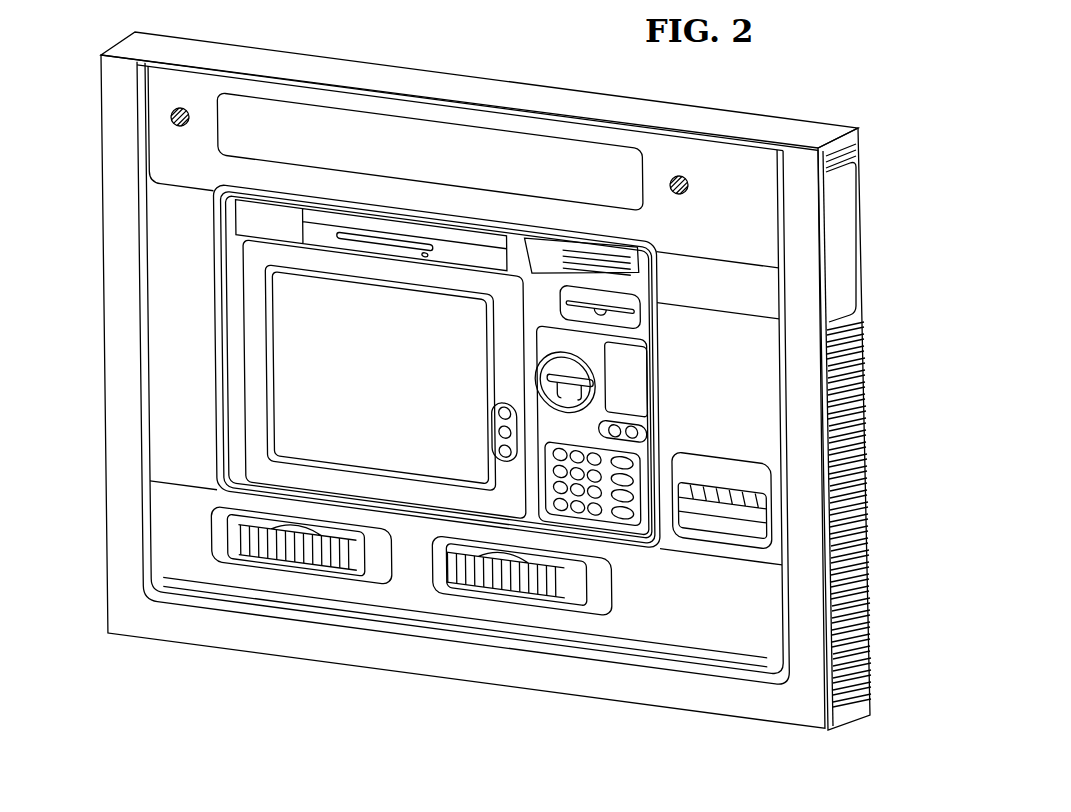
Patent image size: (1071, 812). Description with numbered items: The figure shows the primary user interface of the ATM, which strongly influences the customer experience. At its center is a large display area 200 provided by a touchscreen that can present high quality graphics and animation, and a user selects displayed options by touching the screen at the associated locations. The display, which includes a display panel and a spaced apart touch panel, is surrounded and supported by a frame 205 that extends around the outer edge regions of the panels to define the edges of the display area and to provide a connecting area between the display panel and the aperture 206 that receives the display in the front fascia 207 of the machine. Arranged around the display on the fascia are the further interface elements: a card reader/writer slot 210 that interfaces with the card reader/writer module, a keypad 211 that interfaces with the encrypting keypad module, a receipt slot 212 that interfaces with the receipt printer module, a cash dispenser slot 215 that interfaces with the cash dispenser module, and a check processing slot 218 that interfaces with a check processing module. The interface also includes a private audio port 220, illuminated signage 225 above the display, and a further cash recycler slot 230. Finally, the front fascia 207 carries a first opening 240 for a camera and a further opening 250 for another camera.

The display area 200 is at (402, 393).
The frame 205 is at (247, 352).
The aperture 206 is at (194, 289).
The front fascia 207 is at (703, 637).
The card reader/writer slot 210 is at (567, 380).
The keypad 211 is at (660, 454).
The receipt slot 212 is at (628, 300).
The cash dispenser slot 215 is at (297, 550).
The check processing slot 218 is at (710, 507).
The private audio port 220 is at (622, 422).
The illuminated signage 225 is at (473, 148).
The cash recycler slot 230 is at (504, 598).
The first opening 240 is at (171, 115).
The further opening 250 is at (685, 177).